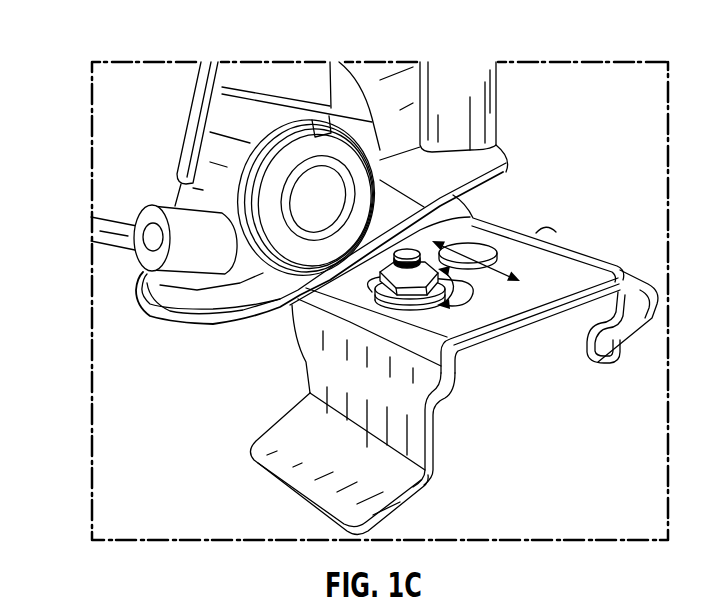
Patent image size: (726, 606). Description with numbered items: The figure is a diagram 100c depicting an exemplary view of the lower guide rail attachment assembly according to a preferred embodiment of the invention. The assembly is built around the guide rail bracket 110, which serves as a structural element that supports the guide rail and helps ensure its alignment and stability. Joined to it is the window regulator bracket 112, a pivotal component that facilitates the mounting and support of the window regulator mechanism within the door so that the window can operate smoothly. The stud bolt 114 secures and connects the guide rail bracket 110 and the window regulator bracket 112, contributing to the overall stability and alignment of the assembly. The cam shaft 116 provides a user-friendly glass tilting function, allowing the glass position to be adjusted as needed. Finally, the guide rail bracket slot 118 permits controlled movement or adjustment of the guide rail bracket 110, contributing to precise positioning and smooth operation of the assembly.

The diagram 100c is at (114, 52).
The guide rail bracket 110 is at (547, 267).
The window regulator bracket 112 is at (297, 443).
The stud bolt 114 is at (476, 250).
The cam shaft 116 is at (446, 272).
The guide rail bracket slot 118 is at (437, 288).